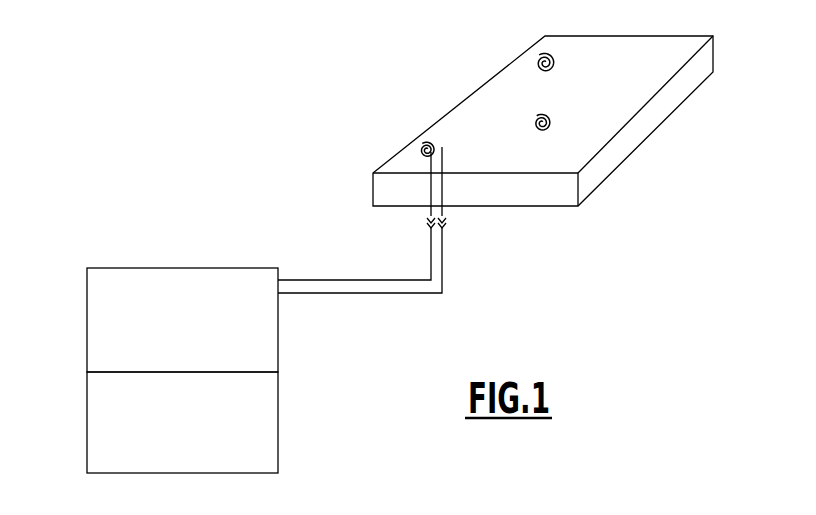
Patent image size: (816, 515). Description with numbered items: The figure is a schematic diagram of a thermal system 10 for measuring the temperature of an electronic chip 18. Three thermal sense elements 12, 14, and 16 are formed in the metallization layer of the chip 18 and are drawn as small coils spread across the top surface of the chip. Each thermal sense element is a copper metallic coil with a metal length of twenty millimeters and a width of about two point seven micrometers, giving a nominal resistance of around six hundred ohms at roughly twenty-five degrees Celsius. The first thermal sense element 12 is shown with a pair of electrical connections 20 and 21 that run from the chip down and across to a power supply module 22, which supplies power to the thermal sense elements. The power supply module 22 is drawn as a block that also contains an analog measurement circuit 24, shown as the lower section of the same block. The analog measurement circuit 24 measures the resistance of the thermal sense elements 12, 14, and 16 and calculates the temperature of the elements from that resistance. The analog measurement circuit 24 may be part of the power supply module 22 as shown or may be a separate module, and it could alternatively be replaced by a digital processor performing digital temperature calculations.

The thermal system 10 is at (212, 80).
The thermal sense element TS0 12 is at (416, 148).
The thermal sense element TS1 14 is at (537, 134).
The thermal sense element TS2 16 is at (558, 55).
The electronic chip 18 is at (473, 92).
The electrical connection 20 is at (426, 218).
The electrical connection 21 is at (447, 218).
The power supply module 22 is at (87, 328).
The analog measurement circuit 24 is at (278, 395).